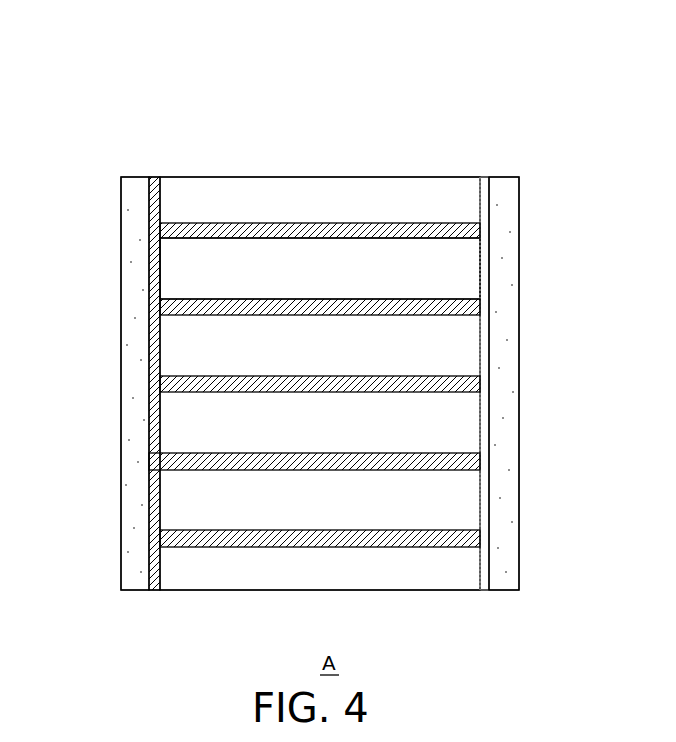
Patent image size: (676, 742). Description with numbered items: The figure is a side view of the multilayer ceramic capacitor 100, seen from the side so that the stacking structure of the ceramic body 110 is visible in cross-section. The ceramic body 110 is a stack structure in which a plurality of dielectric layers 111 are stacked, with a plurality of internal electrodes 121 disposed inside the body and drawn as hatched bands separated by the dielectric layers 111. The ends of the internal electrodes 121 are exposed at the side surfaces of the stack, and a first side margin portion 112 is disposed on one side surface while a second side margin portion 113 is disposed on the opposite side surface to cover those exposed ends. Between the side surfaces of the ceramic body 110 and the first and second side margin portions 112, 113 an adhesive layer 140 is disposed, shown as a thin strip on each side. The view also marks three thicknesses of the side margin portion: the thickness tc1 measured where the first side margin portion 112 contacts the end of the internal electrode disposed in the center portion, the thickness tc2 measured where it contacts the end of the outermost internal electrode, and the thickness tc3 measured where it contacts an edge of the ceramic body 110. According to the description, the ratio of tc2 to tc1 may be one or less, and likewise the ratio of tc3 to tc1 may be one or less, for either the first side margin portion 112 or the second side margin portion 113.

The multilayer ceramic capacitor 100 is at (339, 42).
The ceramic body 110 is at (377, 177).
The dielectric layer 111 is at (470, 267).
The first side margin portion 112 is at (135, 577).
The second side margin portion 113 is at (503, 577).
The internal electrode 121 is at (472, 228).
The adhesive layer 140 is at (153, 177).
The thickness tc1 is at (149, 383).
The thickness tc2 is at (149, 222).
The thickness tc3 is at (149, 185).